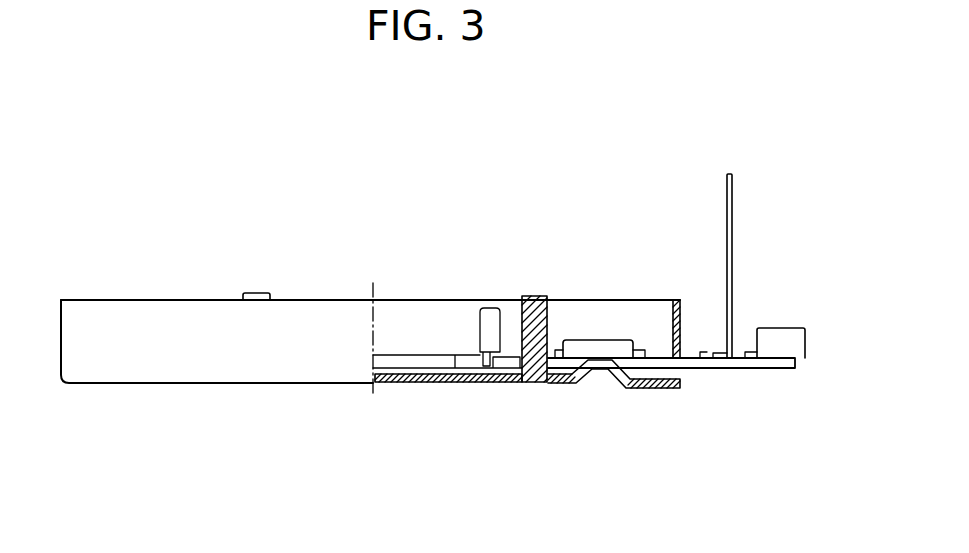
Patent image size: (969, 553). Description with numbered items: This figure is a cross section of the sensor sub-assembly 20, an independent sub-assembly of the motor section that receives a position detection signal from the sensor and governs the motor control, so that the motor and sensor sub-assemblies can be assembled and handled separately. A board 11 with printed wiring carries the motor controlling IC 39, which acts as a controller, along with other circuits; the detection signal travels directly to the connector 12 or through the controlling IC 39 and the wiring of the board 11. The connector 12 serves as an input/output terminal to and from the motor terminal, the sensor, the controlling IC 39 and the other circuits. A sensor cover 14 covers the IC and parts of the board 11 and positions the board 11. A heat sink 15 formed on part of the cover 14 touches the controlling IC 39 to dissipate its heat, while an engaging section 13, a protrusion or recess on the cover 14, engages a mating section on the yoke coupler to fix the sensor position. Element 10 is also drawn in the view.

The pin terminal 10 is at (732, 255).
The board 11 is at (793, 373).
The connector 12 is at (778, 335).
The engaging section 13 is at (258, 293).
The sensor cover 14 is at (450, 385).
The heat sink 15 is at (598, 377).
The sensor sub-assembly 20 is at (310, 355).
The motor controlling IC 39 is at (604, 340).